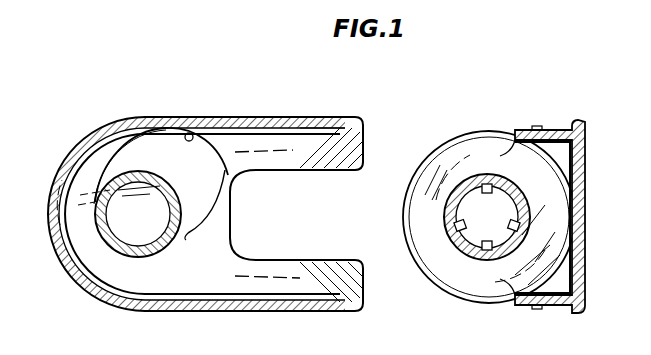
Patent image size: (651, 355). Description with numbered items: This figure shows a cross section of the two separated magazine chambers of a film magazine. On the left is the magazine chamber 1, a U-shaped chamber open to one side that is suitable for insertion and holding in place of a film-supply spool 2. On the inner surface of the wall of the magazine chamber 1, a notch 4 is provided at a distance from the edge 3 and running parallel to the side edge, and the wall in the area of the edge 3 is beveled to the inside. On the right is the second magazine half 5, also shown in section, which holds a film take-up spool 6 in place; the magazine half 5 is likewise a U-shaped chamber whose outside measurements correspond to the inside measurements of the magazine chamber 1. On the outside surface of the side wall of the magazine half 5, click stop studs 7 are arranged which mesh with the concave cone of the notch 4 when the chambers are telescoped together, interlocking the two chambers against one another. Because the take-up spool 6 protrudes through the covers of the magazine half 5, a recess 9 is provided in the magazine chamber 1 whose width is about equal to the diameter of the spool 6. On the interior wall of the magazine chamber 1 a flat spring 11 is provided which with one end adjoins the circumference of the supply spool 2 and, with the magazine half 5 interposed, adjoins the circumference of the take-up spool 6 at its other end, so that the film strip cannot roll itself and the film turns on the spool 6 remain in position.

The magazine chamber 1 is at (120, 305).
The film-supply spool 2 is at (165, 252).
The edge 3 is at (363, 157).
The notch 4 is at (328, 122).
The second magazine half 5 is at (583, 264).
The film take-up spool 6 is at (455, 242).
The click stop studs 7 is at (535, 126).
The recess 9 is at (315, 222).
The flat spring 11 is at (133, 145).